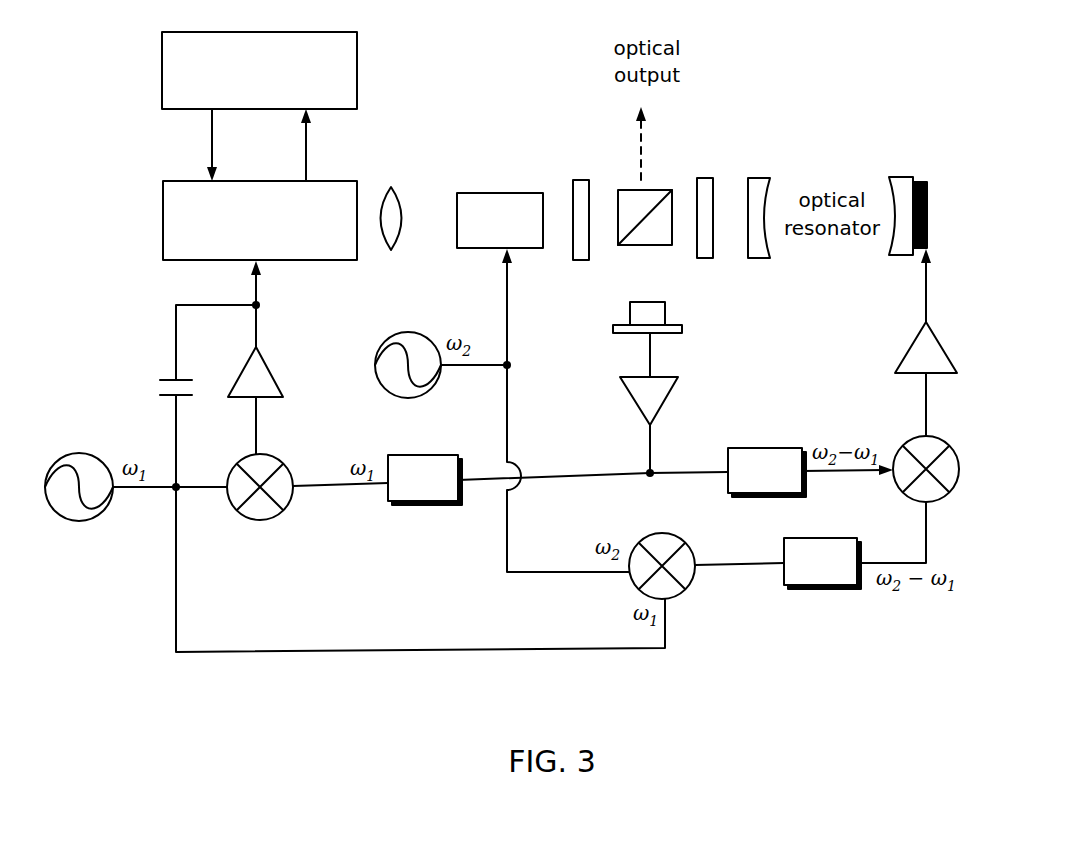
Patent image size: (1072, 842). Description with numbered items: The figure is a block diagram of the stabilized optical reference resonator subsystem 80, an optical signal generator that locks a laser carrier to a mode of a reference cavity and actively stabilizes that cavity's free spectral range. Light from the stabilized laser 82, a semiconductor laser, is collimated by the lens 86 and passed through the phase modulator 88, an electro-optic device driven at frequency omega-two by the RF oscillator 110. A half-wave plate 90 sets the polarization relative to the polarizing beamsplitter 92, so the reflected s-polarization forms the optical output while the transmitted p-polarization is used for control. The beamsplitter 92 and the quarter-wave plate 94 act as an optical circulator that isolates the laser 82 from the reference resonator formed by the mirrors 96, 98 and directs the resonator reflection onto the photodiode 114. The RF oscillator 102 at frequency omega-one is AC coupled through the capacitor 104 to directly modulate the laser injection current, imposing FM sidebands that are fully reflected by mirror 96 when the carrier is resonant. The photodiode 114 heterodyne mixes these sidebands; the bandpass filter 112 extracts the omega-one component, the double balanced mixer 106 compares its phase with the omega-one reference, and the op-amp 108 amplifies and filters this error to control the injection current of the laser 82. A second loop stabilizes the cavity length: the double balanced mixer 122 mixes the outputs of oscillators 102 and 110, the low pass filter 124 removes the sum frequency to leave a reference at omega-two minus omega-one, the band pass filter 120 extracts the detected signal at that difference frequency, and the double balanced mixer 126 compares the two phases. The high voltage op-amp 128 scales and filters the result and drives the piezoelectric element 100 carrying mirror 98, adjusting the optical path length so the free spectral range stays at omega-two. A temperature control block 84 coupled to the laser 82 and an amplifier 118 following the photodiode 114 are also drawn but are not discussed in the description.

The stabilized optical reference resonator subsystem 80 is at (146, 689).
The stabilized laser 82 is at (157, 212).
The temperature control 84 is at (155, 70).
The lens 86 is at (393, 182).
The phase modulator 88 is at (532, 182).
The half-wave plate 90 is at (585, 178).
The polarizing beamsplitter 92 is at (655, 180).
The quarter-wave plate 94 is at (707, 175).
The mirror 96 is at (758, 170).
The mirror 98 is at (898, 172).
The piezoelectric element 100 is at (922, 175).
The RF oscillator 102 is at (73, 447).
The capacitor 104 is at (163, 370).
The double balanced mixer 106 is at (287, 515).
The op-amp 108 is at (273, 362).
The RF oscillator 110 is at (408, 327).
The bandpass filter 112 is at (417, 505).
The photodiode 114 is at (675, 316).
The amplifier 118 is at (680, 403).
The band pass filter 120 is at (780, 437).
The double balanced mixer 122 is at (685, 592).
The low pass filter 124 is at (817, 593).
The double balanced mixer 126 is at (958, 437).
The high voltage op-amp 128 is at (943, 337).